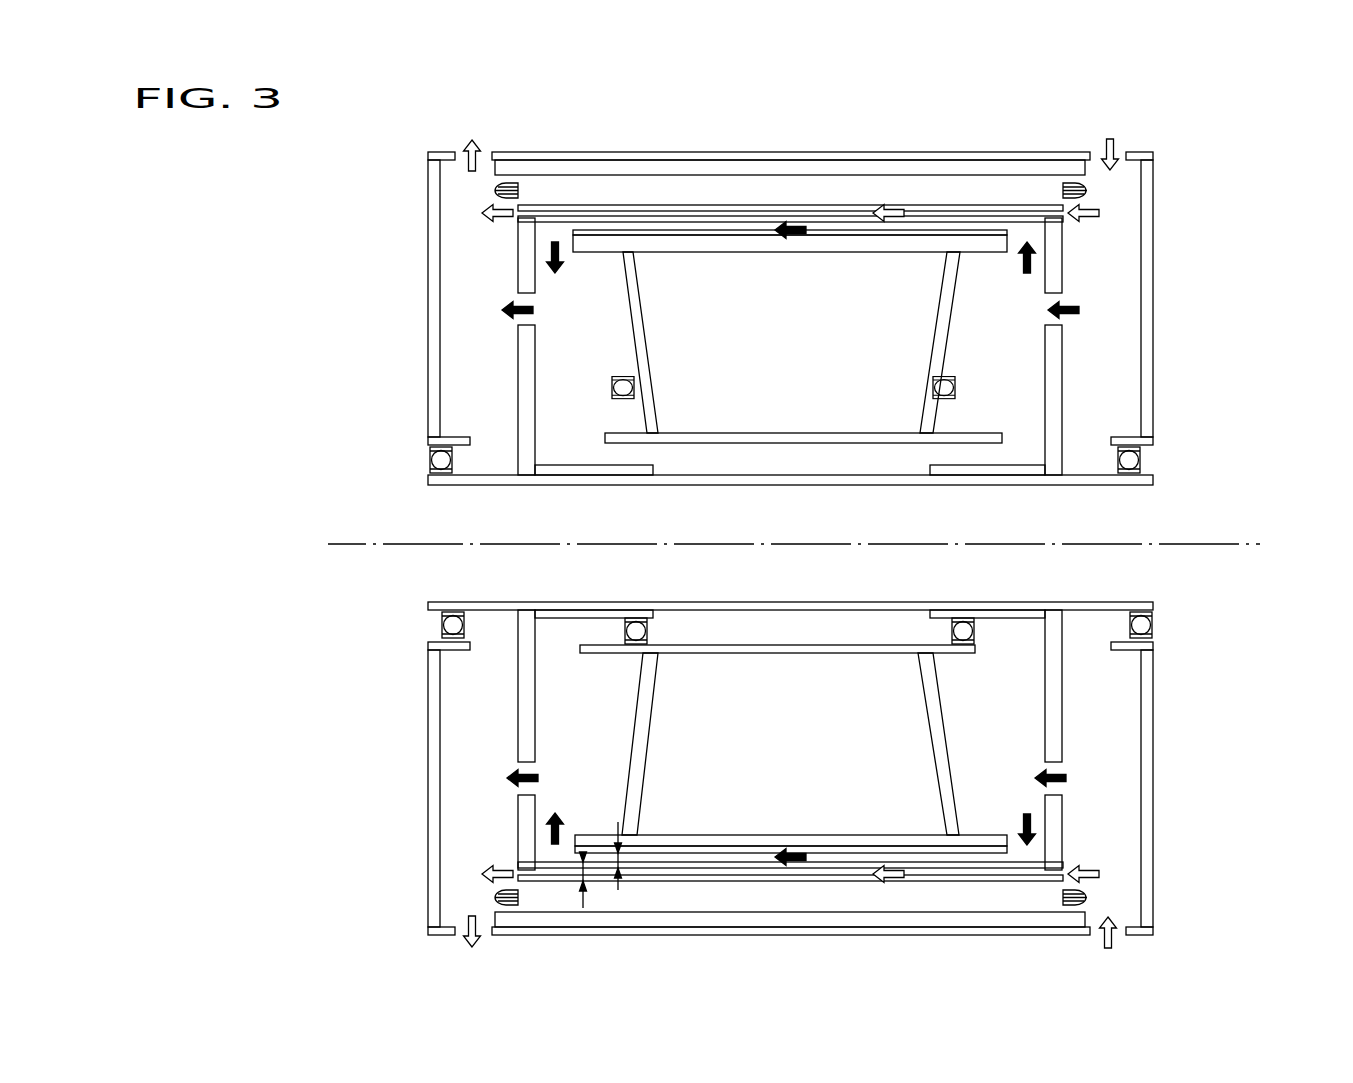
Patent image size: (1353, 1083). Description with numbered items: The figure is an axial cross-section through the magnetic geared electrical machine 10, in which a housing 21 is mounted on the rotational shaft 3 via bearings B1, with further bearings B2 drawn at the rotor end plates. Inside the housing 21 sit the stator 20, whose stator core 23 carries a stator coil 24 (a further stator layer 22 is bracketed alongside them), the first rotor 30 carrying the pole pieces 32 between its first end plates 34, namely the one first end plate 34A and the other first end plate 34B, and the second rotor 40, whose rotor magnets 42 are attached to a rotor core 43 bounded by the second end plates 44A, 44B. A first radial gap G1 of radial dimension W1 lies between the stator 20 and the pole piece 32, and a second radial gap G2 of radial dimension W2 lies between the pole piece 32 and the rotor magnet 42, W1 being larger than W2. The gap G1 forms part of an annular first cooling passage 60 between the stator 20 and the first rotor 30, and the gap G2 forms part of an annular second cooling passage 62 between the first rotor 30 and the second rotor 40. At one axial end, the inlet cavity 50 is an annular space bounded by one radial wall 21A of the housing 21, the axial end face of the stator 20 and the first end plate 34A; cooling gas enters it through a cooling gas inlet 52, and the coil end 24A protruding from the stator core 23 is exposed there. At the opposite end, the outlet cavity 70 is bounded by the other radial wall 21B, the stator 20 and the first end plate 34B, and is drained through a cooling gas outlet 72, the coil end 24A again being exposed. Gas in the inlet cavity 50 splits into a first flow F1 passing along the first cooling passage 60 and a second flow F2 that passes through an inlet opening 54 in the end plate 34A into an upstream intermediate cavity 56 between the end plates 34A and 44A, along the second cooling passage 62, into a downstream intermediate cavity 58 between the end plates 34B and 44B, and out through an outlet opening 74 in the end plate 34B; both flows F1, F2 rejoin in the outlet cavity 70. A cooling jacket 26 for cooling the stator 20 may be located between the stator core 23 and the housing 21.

The magnetic geared electrical machine 10 is at (1302, 104).
The rotational shaft 3 is at (1140, 605).
The stator 20 is at (893, 516).
The housing 21 is at (791, 516).
The one radial wall 21A is at (1155, 415).
The another radial wall 21B is at (428, 245).
The slide plate 22 is at (1065, 218).
The stator core 23 is at (1055, 178).
The stator coil 24 is at (1089, 190).
The coil end 24A is at (508, 183).
The cooling jacket 26 is at (846, 160).
The first rotor 30 is at (906, 544).
The pole piece 32 is at (1030, 222).
The arm 34 is at (882, 543).
The first end plate 34A is at (1062, 390).
The first end plate 34B is at (537, 390).
The second rotor 40 is at (935, 797).
The rotor magnet 42 is at (1007, 850).
The rotor core 43 is at (980, 840).
The second end plate 44A is at (933, 356).
The second end plate 44B is at (656, 356).
The inlet cavity 50 is at (1110, 695).
The cooling gas inlet 52 is at (1128, 150).
The inlet opening 54 is at (1050, 325).
The upstream intermediate cavity 56 is at (1022, 435).
The downstream intermediate cavity 58 is at (555, 435).
The first cooling passage 60 is at (973, 213).
The second cooling passage 62 is at (985, 232).
The outlet cavity 70 is at (462, 733).
The cooling gas outlet 72 is at (455, 150).
The outlet opening 74 is at (530, 325).
The bearing B1 is at (440, 624).
The table bearing B2 is at (627, 630).
The first flow F1 is at (883, 222).
The second flow F2 is at (789, 238).
The first radial gap G1 is at (940, 876).
The second radial gap G2 is at (985, 856).
The radial dimension W1 is at (563, 882).
The radial dimension W2 is at (644, 867).